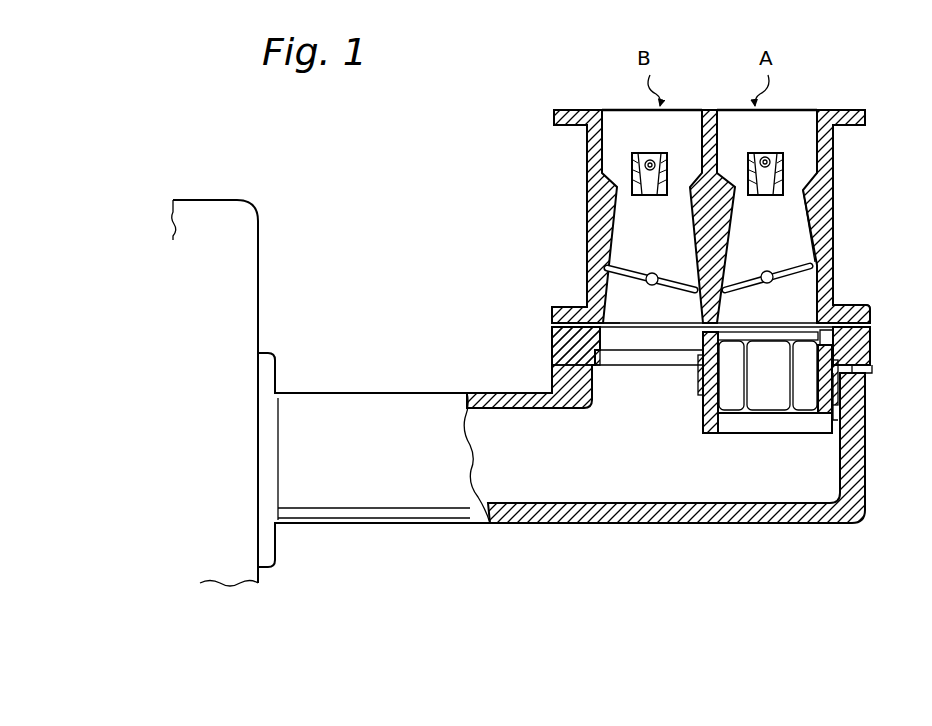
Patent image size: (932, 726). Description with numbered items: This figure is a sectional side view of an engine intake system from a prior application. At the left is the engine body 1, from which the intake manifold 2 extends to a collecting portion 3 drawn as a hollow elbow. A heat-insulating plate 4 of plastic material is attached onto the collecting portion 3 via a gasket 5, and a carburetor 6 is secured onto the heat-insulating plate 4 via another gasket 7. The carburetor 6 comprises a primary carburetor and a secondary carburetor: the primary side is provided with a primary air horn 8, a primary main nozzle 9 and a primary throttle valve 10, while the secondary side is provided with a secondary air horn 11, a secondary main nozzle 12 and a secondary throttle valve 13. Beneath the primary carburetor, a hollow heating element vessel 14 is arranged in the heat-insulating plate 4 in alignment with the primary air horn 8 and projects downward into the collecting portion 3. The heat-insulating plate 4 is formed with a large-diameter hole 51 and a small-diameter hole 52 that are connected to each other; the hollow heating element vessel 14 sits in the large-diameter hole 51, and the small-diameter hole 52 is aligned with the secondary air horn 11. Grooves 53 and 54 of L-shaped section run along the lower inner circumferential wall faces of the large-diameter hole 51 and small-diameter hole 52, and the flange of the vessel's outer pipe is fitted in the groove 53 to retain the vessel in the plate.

The engine body 1 is at (261, 254).
The intake manifold 2 is at (383, 514).
The collecting portion 3 is at (740, 488).
The heat-insulating plate 4 is at (862, 342).
The gasket 5 is at (866, 371).
The carburetor 6 is at (820, 206).
The gasket 7 is at (870, 318).
The primary air horn 8 is at (772, 240).
The primary main nozzle 9 is at (767, 157).
The primary throttle valve 10 is at (806, 262).
The secondary air horn 11 is at (661, 240).
The secondary main nozzle 12 is at (646, 156).
The secondary throttle valve 13 is at (628, 262).
The hollow heating element vessel 14 is at (700, 407).
The large-diameter hole 51 is at (800, 318).
The small-diameter hole 52 is at (620, 320).
The groove 53 is at (830, 373).
The groove 54 is at (605, 366).